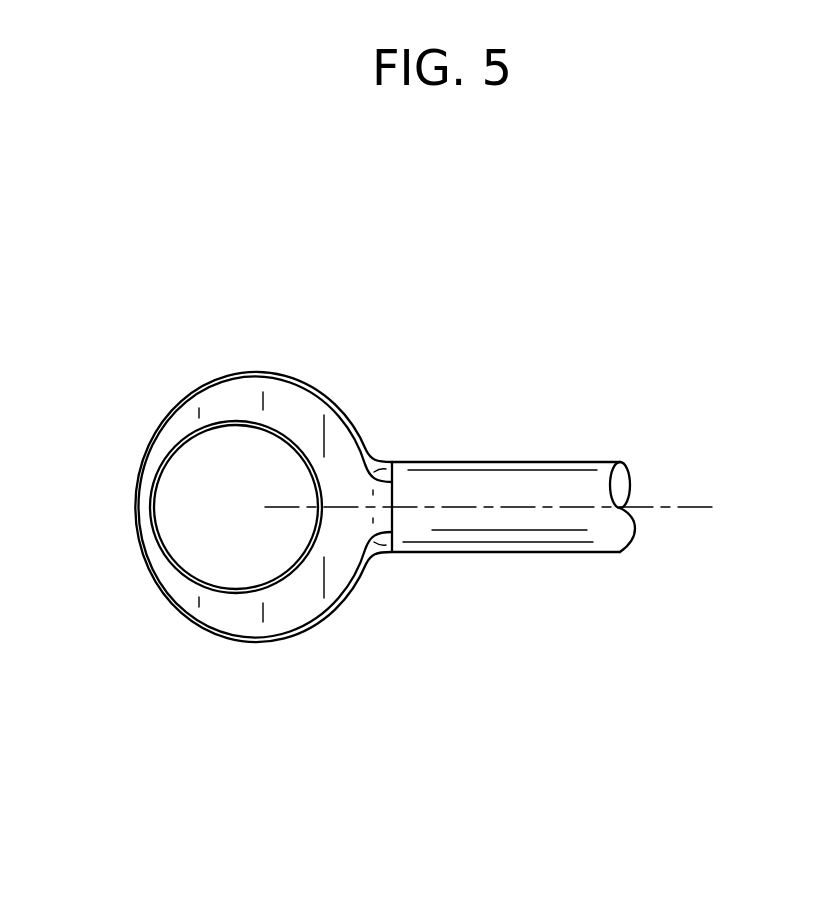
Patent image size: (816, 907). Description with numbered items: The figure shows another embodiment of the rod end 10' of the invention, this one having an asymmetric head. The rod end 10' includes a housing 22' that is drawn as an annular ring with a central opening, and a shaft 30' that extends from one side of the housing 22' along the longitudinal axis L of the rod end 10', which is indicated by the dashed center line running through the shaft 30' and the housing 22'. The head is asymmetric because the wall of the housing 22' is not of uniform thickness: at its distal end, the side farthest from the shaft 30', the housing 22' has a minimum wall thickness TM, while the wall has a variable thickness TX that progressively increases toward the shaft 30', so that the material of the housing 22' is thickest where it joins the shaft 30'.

The rod end 10' is at (385, 505).
The housing 22' is at (263, 568).
The shaft 30' is at (513, 551).
The minimum wall thickness TM is at (155, 508).
The variable thickness TX is at (250, 483).
The longitudinal axis L is at (690, 508).